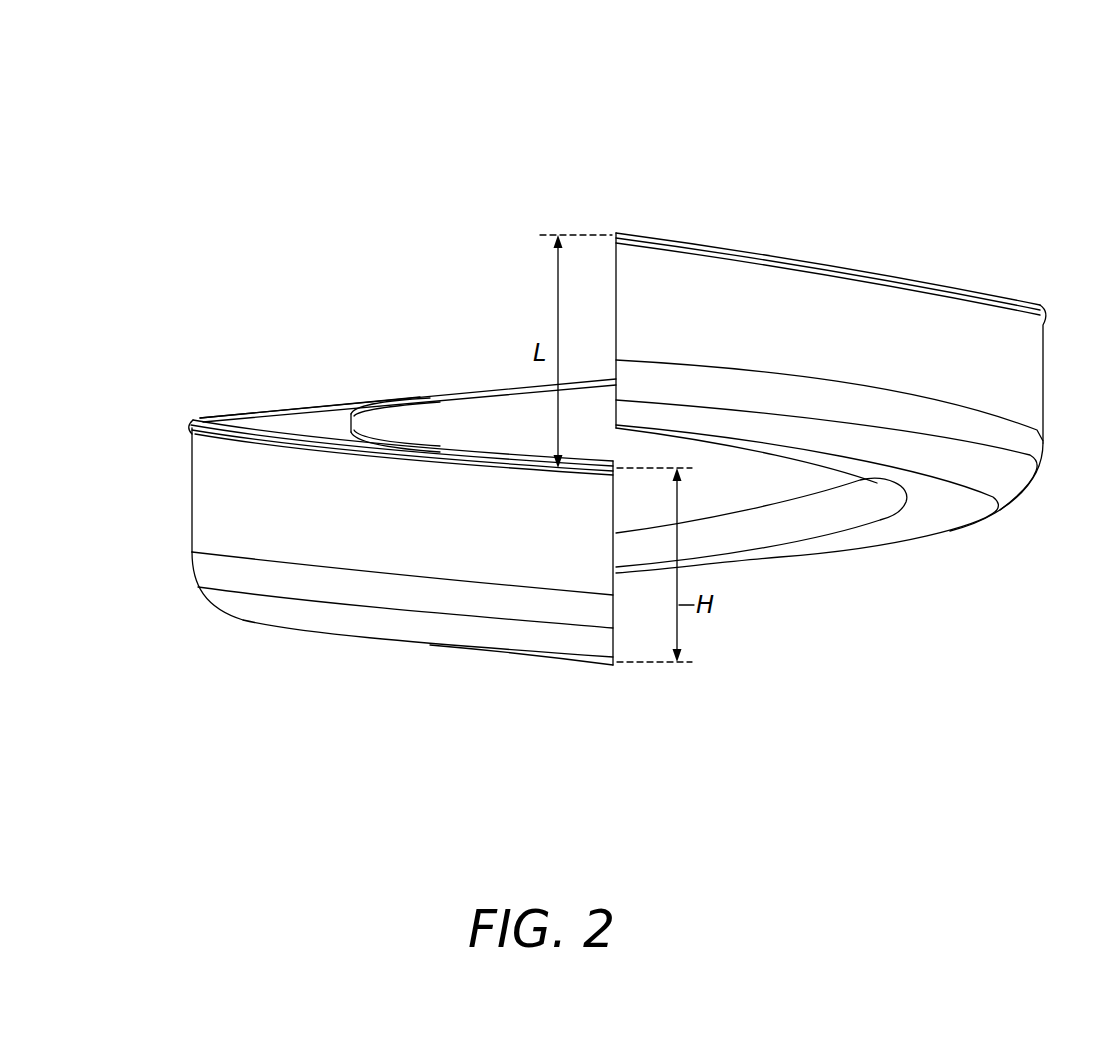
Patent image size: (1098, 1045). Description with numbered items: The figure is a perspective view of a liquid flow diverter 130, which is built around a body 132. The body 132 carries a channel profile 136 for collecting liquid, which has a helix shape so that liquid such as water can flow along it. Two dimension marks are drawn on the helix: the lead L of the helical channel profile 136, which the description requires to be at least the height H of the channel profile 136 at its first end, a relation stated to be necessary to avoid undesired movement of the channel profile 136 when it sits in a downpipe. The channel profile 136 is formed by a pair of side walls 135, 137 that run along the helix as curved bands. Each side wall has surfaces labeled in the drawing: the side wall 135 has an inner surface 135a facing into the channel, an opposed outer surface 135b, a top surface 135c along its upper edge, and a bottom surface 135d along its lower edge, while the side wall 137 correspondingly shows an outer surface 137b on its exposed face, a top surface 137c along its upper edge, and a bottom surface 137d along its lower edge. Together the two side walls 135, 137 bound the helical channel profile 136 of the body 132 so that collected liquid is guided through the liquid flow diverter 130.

The liquid flow diverter 130 is at (981, 80).
The body 132 is at (186, 574).
The side wall 135 is at (762, 499).
The inner surface 135a is at (348, 437).
The outer surface 135b is at (733, 490).
The top surface 135c is at (487, 390).
The bottom surface 135d is at (830, 553).
The channel profile 136 is at (272, 418).
The side wall 137 is at (214, 495).
The outer surface 137b is at (273, 542).
The top surface 137c is at (363, 400).
The bottom surface 137d is at (310, 628).